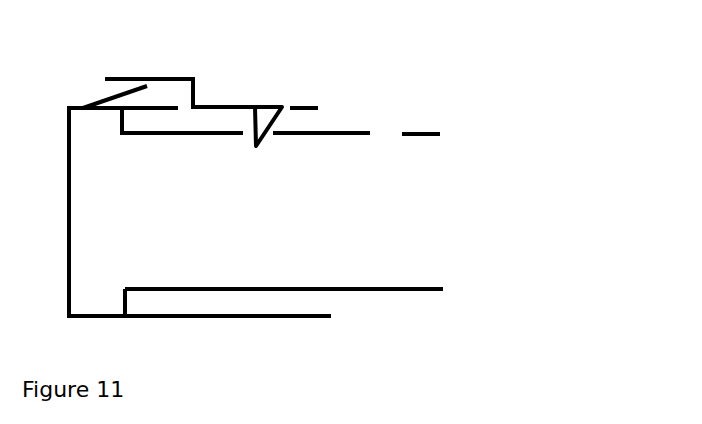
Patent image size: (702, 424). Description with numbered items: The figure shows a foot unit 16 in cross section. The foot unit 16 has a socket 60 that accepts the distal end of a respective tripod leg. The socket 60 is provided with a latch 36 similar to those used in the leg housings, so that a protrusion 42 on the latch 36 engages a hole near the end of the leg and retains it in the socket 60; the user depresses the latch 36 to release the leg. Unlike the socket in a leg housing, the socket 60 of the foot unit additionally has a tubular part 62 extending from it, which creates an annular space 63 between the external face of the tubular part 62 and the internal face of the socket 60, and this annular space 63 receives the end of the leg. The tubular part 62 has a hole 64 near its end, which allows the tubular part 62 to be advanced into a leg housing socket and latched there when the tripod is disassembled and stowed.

The latch member 36 is at (191, 68).
The protrusion 42 is at (264, 116).
The annular space 63 is at (335, 118).
The hole 64 is at (387, 142).
The tubular part 62 is at (440, 278).
The foot unit 16 is at (248, 325).
The socket 60 is at (380, 315).